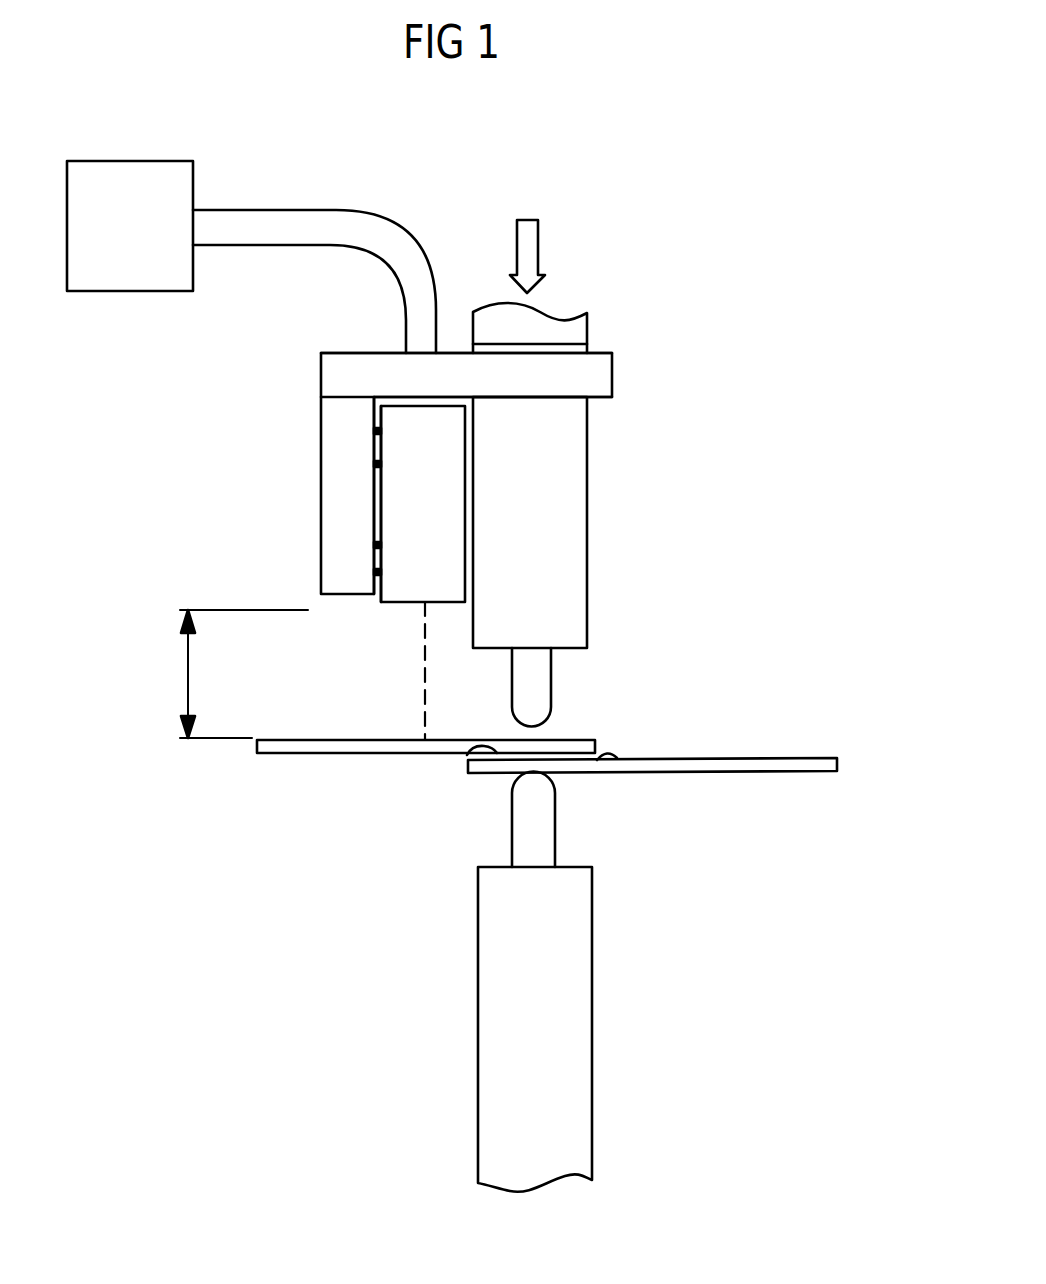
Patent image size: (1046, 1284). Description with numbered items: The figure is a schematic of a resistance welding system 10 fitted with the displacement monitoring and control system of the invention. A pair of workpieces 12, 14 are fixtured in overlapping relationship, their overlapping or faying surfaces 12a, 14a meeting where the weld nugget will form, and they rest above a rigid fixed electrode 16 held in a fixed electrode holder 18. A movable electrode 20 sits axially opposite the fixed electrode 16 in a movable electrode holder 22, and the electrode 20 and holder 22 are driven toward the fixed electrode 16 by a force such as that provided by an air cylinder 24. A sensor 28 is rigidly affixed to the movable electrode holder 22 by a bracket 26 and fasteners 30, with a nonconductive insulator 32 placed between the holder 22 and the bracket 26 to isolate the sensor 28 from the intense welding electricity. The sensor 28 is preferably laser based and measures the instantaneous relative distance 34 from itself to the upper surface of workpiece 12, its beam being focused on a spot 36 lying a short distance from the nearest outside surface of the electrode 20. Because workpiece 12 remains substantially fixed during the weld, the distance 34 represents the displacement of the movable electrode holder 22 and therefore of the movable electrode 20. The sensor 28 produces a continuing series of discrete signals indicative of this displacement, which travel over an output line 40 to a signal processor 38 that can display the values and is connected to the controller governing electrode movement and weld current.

The resistance welding system 10 is at (722, 227).
The workpiece 12 is at (292, 748).
The faying surface 12a is at (467, 755).
The workpiece 14 is at (807, 765).
The faying surface 14a is at (615, 760).
The fixed electrode 16 is at (543, 840).
The fixed electrode holder 18 is at (550, 1048).
The movable electrode 20 is at (537, 708).
The movable electrode holder 22 is at (572, 563).
The air cylinder 24 is at (538, 220).
The bracket 26 is at (338, 365).
The sensor 28 is at (442, 508).
The fasteners 30 is at (373, 557).
The nonconductive insulator 32 is at (580, 405).
The relative distance 34 is at (187, 683).
The spot 36 is at (423, 740).
The signal processor 38 is at (150, 243).
The output line 40 is at (378, 243).